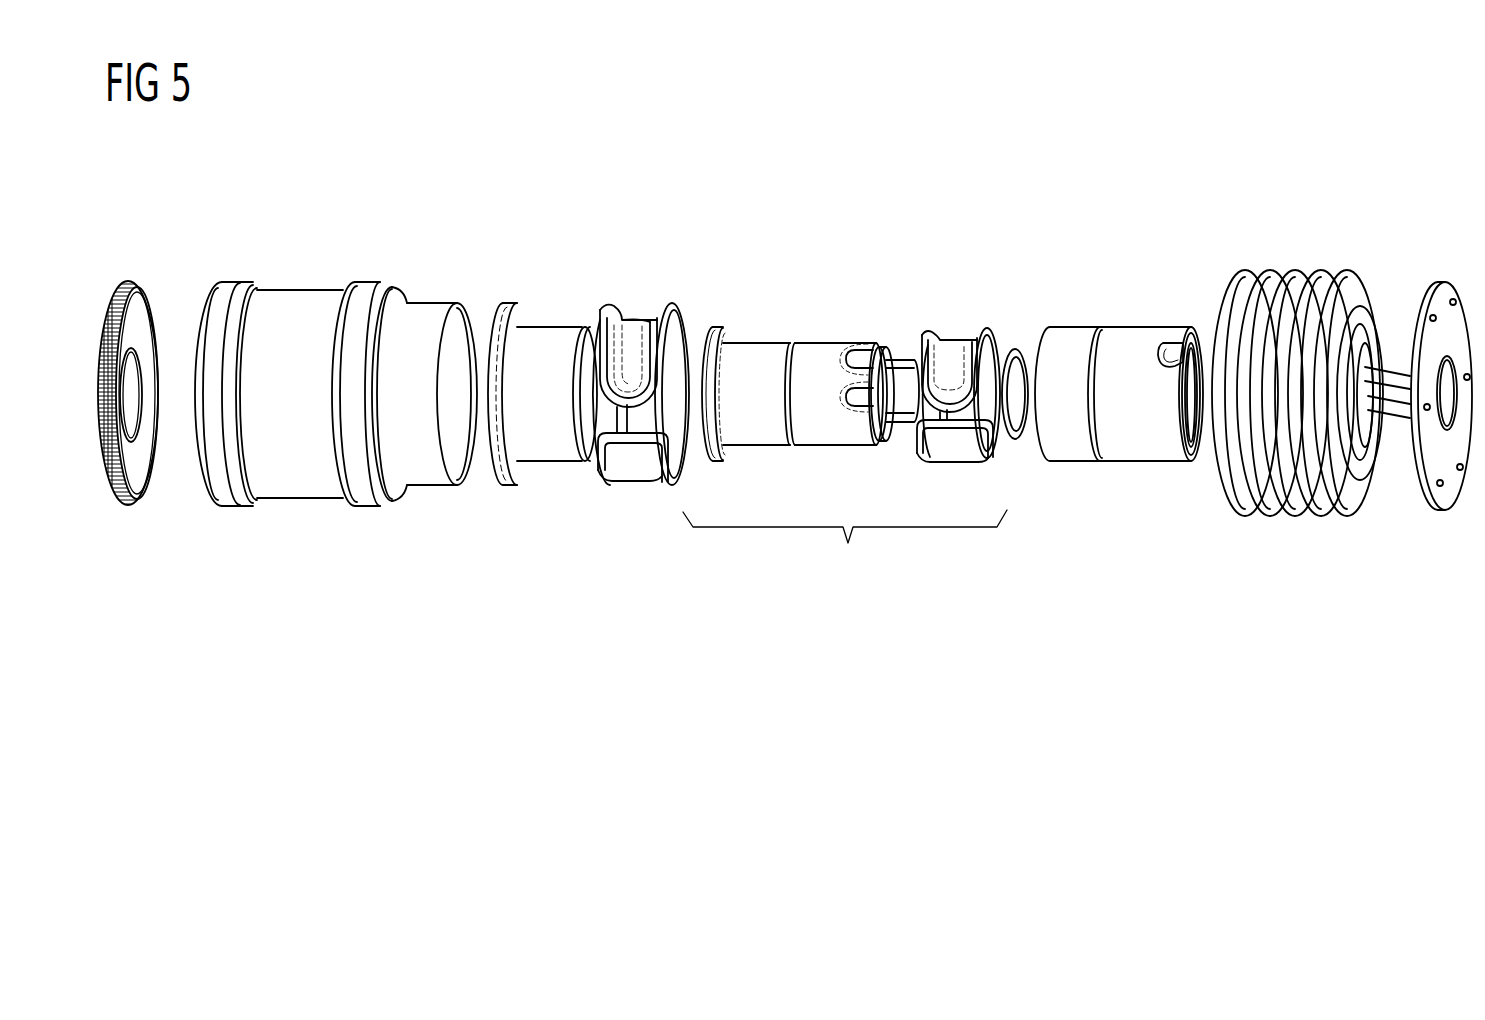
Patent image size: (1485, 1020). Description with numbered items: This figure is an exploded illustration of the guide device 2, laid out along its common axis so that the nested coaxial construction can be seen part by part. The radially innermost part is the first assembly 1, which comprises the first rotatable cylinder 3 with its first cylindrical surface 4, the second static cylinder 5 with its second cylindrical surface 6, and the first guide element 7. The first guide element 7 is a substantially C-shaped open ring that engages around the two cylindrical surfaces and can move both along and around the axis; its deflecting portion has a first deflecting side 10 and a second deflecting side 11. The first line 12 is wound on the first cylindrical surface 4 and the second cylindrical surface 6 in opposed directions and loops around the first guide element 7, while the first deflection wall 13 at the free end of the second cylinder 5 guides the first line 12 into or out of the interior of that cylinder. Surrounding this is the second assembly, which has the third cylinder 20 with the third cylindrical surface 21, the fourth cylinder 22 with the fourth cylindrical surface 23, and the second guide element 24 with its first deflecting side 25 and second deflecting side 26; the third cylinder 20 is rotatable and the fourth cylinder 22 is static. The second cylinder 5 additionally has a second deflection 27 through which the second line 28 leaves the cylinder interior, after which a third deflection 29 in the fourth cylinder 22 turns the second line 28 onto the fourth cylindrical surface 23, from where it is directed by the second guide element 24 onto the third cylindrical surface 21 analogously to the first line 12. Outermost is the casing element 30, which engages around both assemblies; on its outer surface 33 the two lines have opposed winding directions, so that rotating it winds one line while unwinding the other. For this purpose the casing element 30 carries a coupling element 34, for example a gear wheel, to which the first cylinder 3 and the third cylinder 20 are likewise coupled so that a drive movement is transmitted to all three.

The first assembly 1 is at (845, 545).
The guide device 2 is at (436, 600).
The first rotatable cylinder 3 is at (810, 378).
The first cylindrical surface 4 is at (753, 433).
The second static cylinder 5 is at (843, 378).
The second cylindrical surface 6 is at (813, 432).
The first guide element 7 is at (958, 374).
The first deflecting side 10 is at (948, 420).
The second deflecting side 11 is at (967, 427).
The first line 12 is at (1311, 357).
The first deflection wall 13 is at (860, 403).
The third cylinder 20 is at (542, 377).
The third cylindrical surface 21 is at (545, 450).
The fourth cylinder 22 is at (1119, 375).
The fourth cylindrical surface 23 is at (1137, 447).
The second guide element 24 is at (641, 384).
The first deflecting side 25 is at (617, 413).
The second deflecting side 26 is at (643, 433).
The second deflection 27 is at (860, 357).
The second line 28 is at (1307, 278).
The third deflection 29 is at (1163, 345).
The casing element 30 is at (336, 375).
The outer surface 33 is at (292, 488).
The coupling element 34 is at (128, 282).